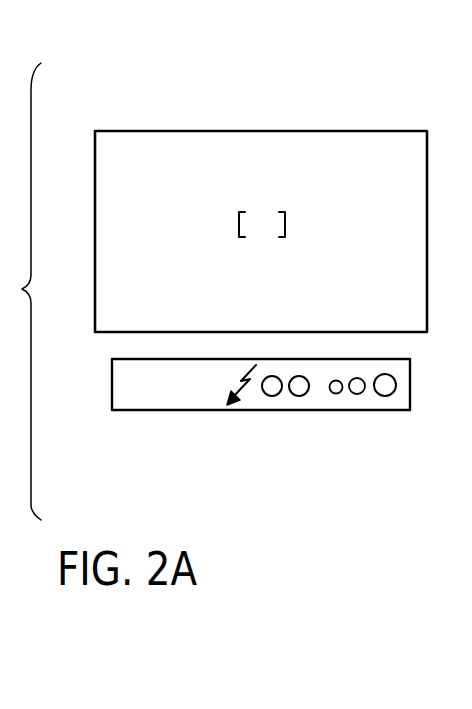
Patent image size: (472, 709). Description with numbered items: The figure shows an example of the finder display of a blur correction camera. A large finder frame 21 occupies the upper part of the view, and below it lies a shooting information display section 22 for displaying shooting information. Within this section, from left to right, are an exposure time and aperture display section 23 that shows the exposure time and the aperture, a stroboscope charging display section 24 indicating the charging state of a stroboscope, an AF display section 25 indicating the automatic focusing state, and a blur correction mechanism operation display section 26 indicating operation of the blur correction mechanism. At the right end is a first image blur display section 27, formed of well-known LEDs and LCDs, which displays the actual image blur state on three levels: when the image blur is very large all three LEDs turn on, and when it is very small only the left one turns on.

The finder frame 21 is at (397, 131).
The shooting information display section 22 is at (112, 395).
The exposure time and aperture display section 23 is at (218, 418).
The stroboscope charging display section 24 is at (236, 412).
The AF display section 25 is at (276, 399).
The blur correction mechanism operation display section 26 is at (309, 399).
The first image blur display section 27 is at (410, 420).